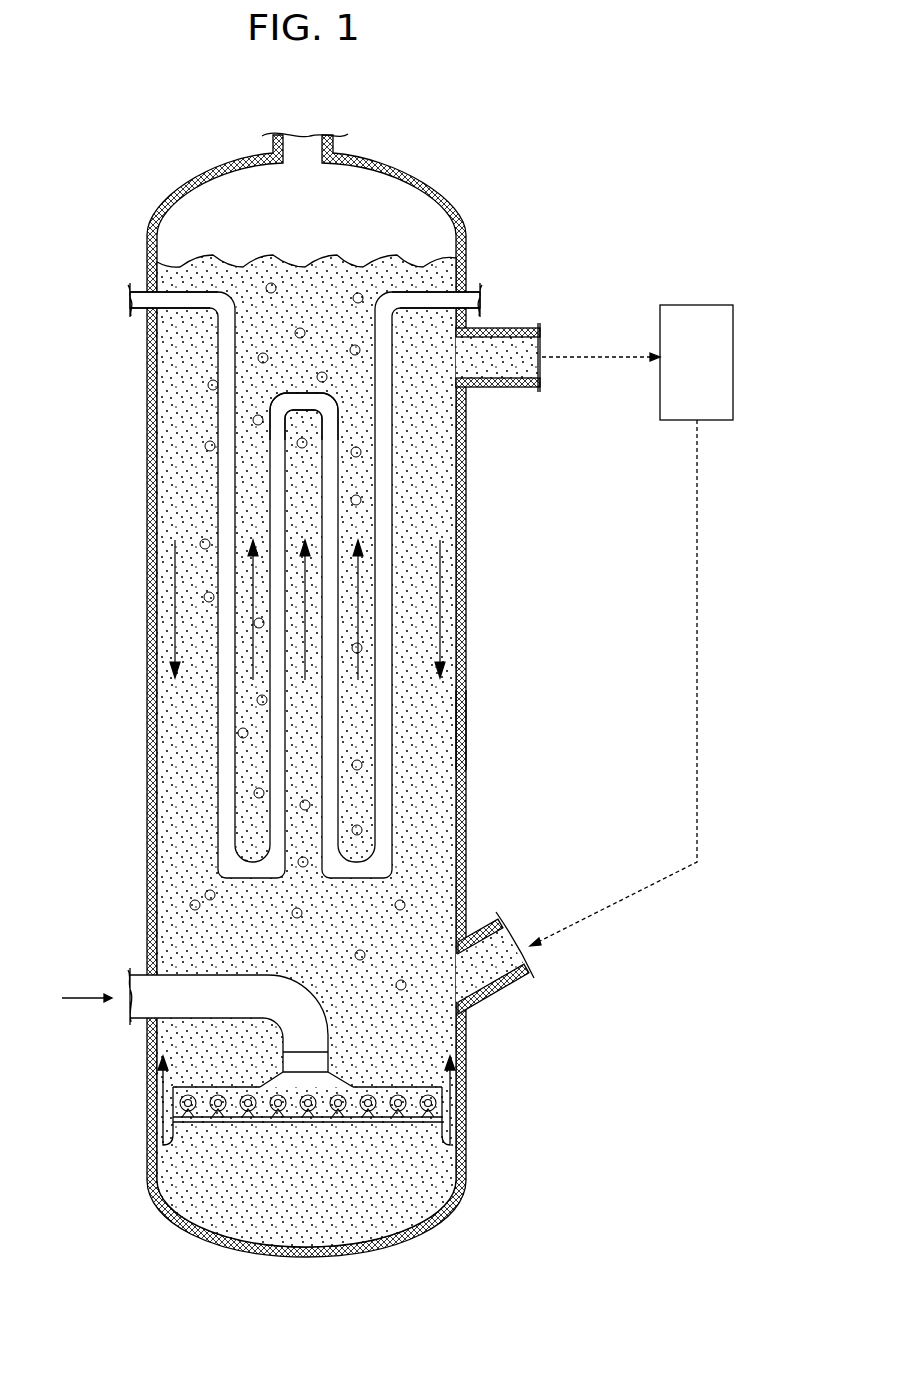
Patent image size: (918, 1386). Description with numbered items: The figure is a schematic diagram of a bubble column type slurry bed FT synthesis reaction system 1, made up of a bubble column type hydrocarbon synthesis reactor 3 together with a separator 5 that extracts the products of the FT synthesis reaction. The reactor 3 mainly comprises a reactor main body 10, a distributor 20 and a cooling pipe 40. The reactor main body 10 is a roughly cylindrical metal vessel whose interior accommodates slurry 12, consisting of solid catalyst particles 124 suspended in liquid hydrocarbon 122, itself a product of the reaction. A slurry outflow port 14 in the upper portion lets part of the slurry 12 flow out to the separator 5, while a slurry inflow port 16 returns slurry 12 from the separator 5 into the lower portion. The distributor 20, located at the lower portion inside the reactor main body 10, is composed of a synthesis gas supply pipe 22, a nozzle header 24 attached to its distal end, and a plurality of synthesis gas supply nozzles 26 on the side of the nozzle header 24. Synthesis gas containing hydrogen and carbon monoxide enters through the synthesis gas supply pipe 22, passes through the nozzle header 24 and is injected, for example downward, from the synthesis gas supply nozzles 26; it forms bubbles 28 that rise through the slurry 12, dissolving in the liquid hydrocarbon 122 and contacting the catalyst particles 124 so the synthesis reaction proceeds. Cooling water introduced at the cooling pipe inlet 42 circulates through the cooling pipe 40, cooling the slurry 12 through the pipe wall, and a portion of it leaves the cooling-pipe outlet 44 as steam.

The bubble column type slurry bed FT synthesis reaction system 1 is at (552, 156).
The reactor 3 is at (151, 209).
The separator 5 is at (704, 305).
The reactor main body 10 is at (459, 487).
The slurry 12 is at (548, 685).
The liquid hydrocarbon 122 is at (448, 745).
The catalyst particles 124 is at (448, 712).
The slurry outflow port 14 is at (486, 344).
The slurry inflow port 16 is at (488, 944).
The distributor 20 is at (348, 1064).
The synthesis gas supply pipe 22 is at (200, 1020).
The nozzle header 24 is at (407, 1080).
The synthesis gas supply nozzles 26 is at (466, 1093).
The bubbles 28 is at (356, 494).
The cooling pipe 40 is at (218, 483).
The cooling pipe inlet 42 is at (137, 318).
The cooling-pipe outlet 44 is at (479, 290).